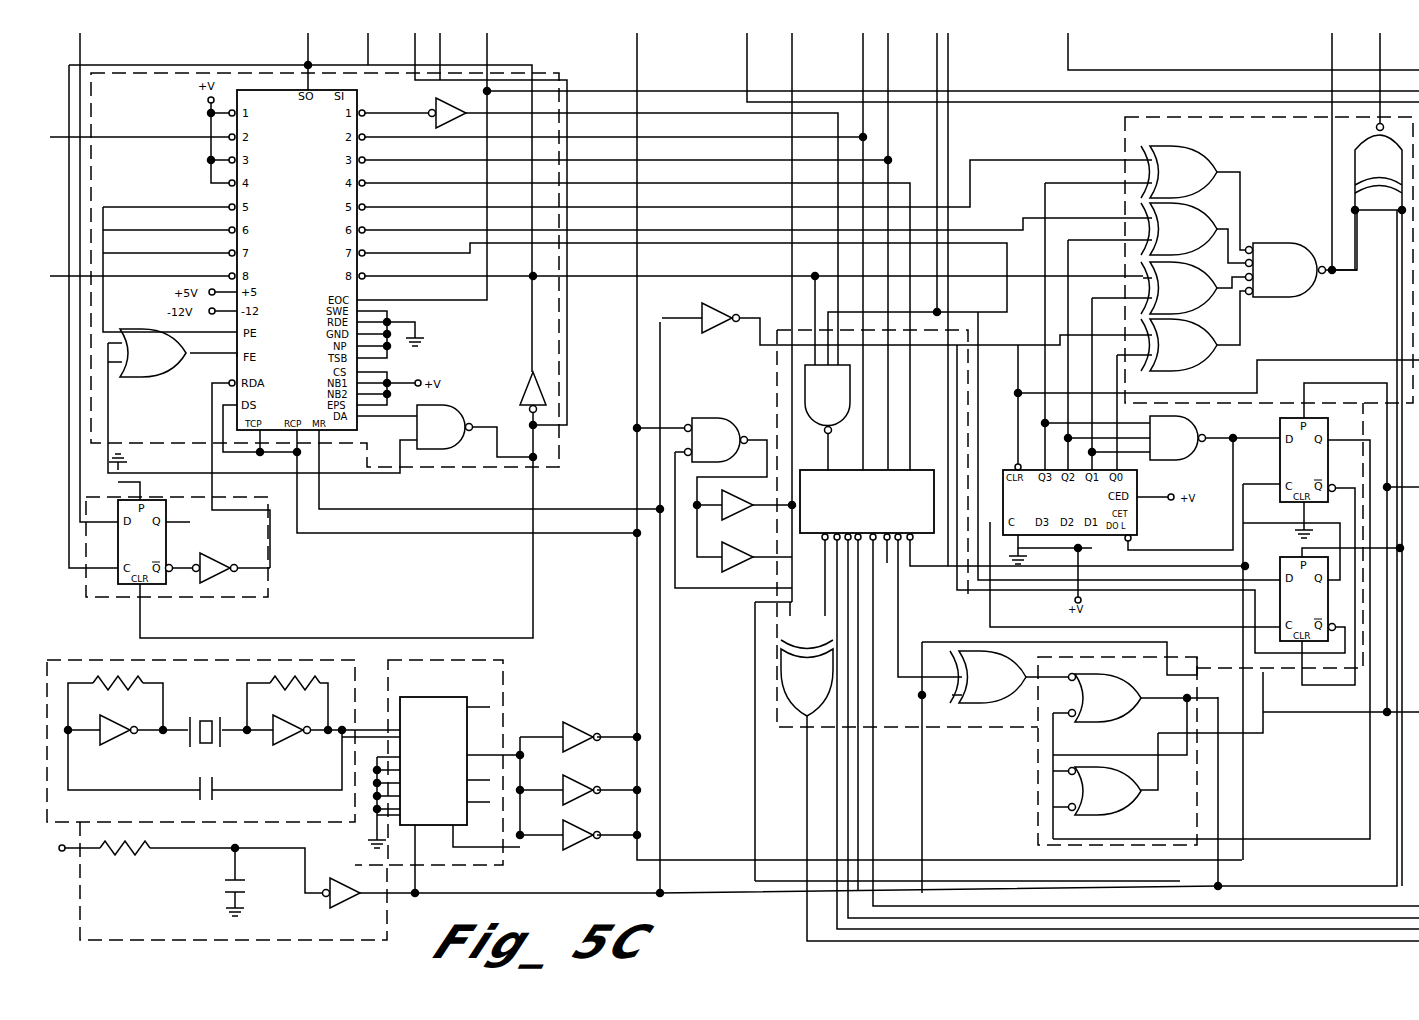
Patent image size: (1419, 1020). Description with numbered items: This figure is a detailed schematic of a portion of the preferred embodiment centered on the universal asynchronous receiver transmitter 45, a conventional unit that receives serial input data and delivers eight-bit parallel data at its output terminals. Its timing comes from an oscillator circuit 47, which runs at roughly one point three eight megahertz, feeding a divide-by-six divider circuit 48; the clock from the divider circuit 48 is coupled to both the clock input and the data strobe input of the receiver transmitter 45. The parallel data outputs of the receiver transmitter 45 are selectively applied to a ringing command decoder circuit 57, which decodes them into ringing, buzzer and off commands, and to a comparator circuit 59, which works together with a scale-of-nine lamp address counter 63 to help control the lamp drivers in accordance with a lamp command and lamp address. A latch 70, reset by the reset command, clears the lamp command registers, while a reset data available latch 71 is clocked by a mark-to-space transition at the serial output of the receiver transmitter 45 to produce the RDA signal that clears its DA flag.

The universal asynchronous receiver transmitter 45 is at (560, 470).
The oscillator circuit 47 is at (103, 660).
The divider circuit 48 is at (504, 670).
The ringing command decoder circuit 57 is at (775, 402).
The comparator circuit 59 is at (1123, 128).
The scale-of-9 lamp address counter 63 is at (1287, 672).
The latch 70 is at (1036, 779).
The reset data available latch 71 is at (268, 598).